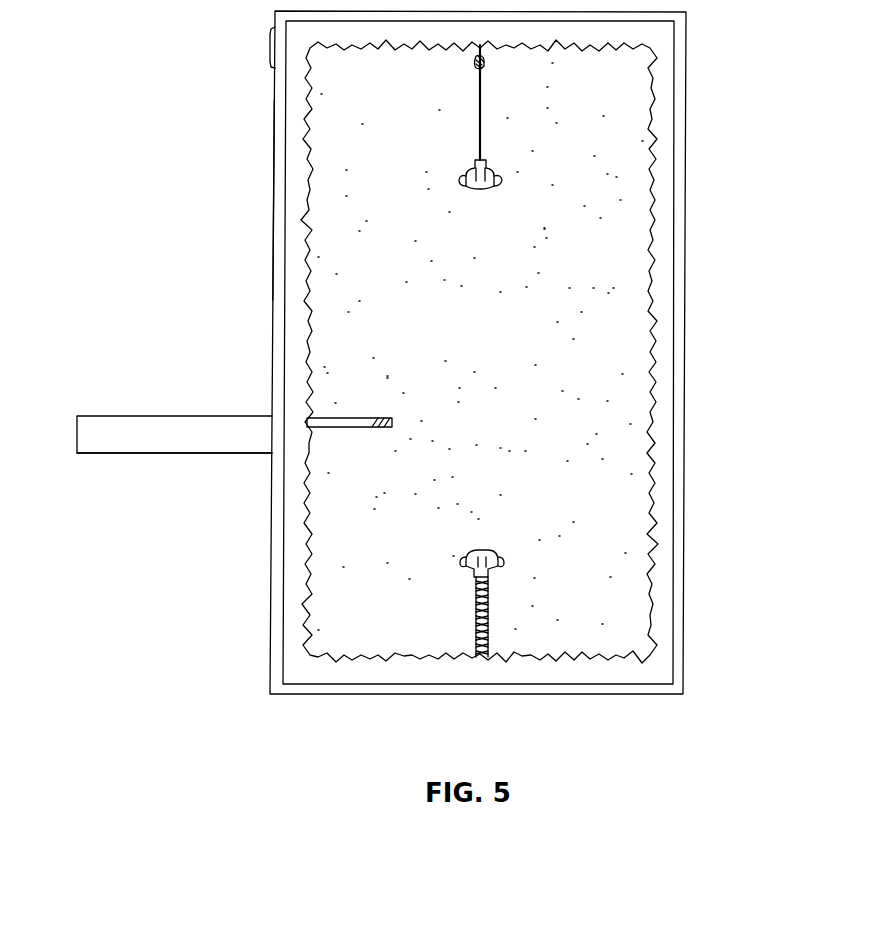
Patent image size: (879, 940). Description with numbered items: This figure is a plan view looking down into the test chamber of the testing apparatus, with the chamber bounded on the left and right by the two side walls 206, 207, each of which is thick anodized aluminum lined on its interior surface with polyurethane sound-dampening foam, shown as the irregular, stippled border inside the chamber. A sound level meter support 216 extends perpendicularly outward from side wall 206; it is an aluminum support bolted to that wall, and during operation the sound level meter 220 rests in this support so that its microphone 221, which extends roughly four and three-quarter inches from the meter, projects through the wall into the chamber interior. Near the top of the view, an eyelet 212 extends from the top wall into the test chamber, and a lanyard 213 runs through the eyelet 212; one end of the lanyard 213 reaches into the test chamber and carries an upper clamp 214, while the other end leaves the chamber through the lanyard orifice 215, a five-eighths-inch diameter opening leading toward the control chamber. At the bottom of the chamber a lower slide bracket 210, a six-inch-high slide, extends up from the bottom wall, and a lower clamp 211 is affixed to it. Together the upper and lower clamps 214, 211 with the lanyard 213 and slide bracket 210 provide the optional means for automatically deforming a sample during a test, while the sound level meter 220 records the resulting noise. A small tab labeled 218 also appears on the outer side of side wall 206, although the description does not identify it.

The side wall 206 is at (274, 177).
The side wall 207 is at (685, 250).
The lower slide bracket 210 is at (489, 612).
The lower clamp 211 is at (500, 557).
The eyelet 212 is at (505, 70).
The lanyard 213 is at (488, 112).
The upper clamp 214 is at (500, 178).
The lanyard orifice 215 is at (473, 67).
The sound level meter support 216 is at (170, 456).
The tab 218 is at (268, 48).
The sound level meter 220 is at (178, 414).
The microphone 221 is at (347, 413).